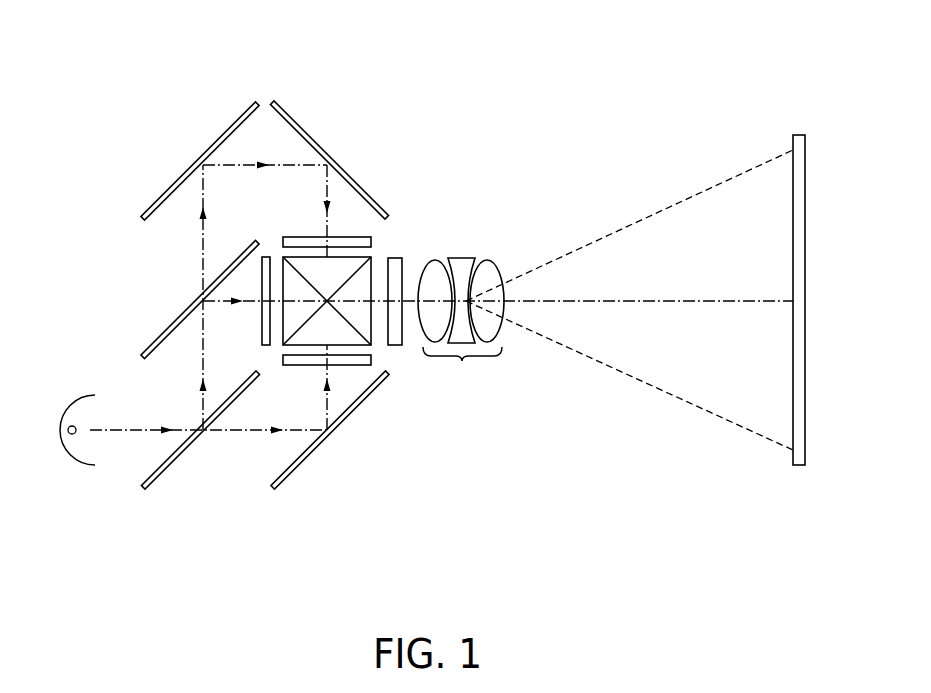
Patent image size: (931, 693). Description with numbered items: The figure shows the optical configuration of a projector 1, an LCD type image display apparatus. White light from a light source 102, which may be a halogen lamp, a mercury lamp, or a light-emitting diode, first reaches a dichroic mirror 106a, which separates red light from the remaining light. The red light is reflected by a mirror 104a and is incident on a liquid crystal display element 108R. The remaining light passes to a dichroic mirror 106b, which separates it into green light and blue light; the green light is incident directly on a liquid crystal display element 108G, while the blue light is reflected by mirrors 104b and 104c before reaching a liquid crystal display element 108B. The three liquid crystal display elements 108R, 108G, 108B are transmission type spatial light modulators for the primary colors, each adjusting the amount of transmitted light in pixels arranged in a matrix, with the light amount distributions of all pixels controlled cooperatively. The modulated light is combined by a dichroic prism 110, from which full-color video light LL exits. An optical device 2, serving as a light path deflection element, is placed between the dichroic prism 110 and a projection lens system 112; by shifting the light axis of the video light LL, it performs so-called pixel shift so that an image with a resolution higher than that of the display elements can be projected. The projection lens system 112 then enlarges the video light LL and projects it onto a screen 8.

The projector 1 is at (684, 73).
The optical device 2 is at (403, 330).
The screen 8 is at (799, 466).
The light source 102 is at (73, 462).
The mirror 104a is at (302, 467).
The mirror 104b is at (222, 130).
The mirror 104c is at (307, 128).
The dichroic mirror 106a is at (172, 470).
The dichroic mirror 106b is at (165, 332).
The liquid crystal display element 108R is at (307, 367).
The liquid crystal display element 108G is at (260, 312).
The liquid crystal display element 108B is at (372, 240).
The dichroic prism 110 is at (365, 258).
The projection lens system 112 is at (461, 325).
The video light LL is at (387, 350).